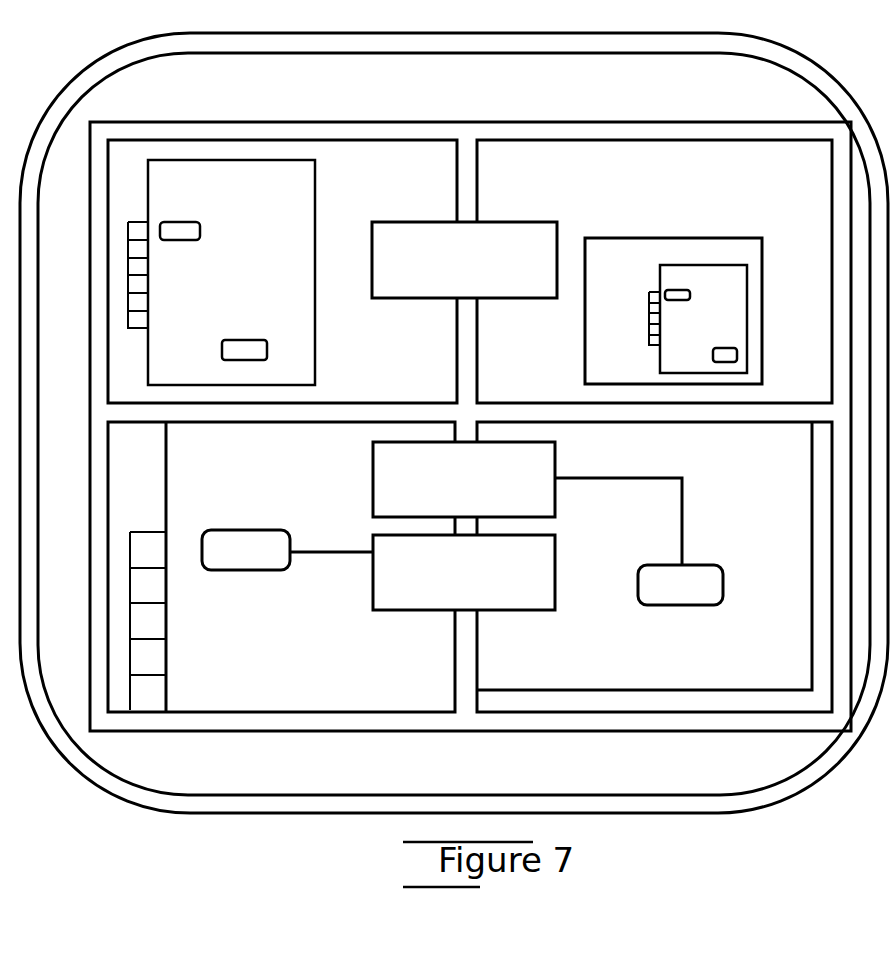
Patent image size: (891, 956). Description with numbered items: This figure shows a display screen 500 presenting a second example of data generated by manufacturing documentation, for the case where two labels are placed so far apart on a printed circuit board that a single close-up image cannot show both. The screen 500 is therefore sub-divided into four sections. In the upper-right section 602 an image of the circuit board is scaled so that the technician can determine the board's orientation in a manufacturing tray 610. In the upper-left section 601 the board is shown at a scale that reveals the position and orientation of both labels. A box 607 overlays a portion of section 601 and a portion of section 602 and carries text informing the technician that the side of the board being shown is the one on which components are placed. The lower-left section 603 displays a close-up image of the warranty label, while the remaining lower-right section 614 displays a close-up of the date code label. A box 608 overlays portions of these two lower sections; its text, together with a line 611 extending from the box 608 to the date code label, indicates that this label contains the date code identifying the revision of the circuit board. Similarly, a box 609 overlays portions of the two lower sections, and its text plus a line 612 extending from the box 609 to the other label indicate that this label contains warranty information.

The screen 500 is at (748, 813).
The screen section 601 is at (392, 147).
The screen section 602 is at (670, 142).
The screen section 603 is at (405, 712).
The fourth quadrant 614 is at (645, 712).
The box 607 is at (496, 298).
The box 608 is at (558, 495).
The box 609 is at (398, 611).
The manufacturing tray 610 is at (585, 362).
The line 611 is at (624, 477).
The line 612 is at (330, 554).